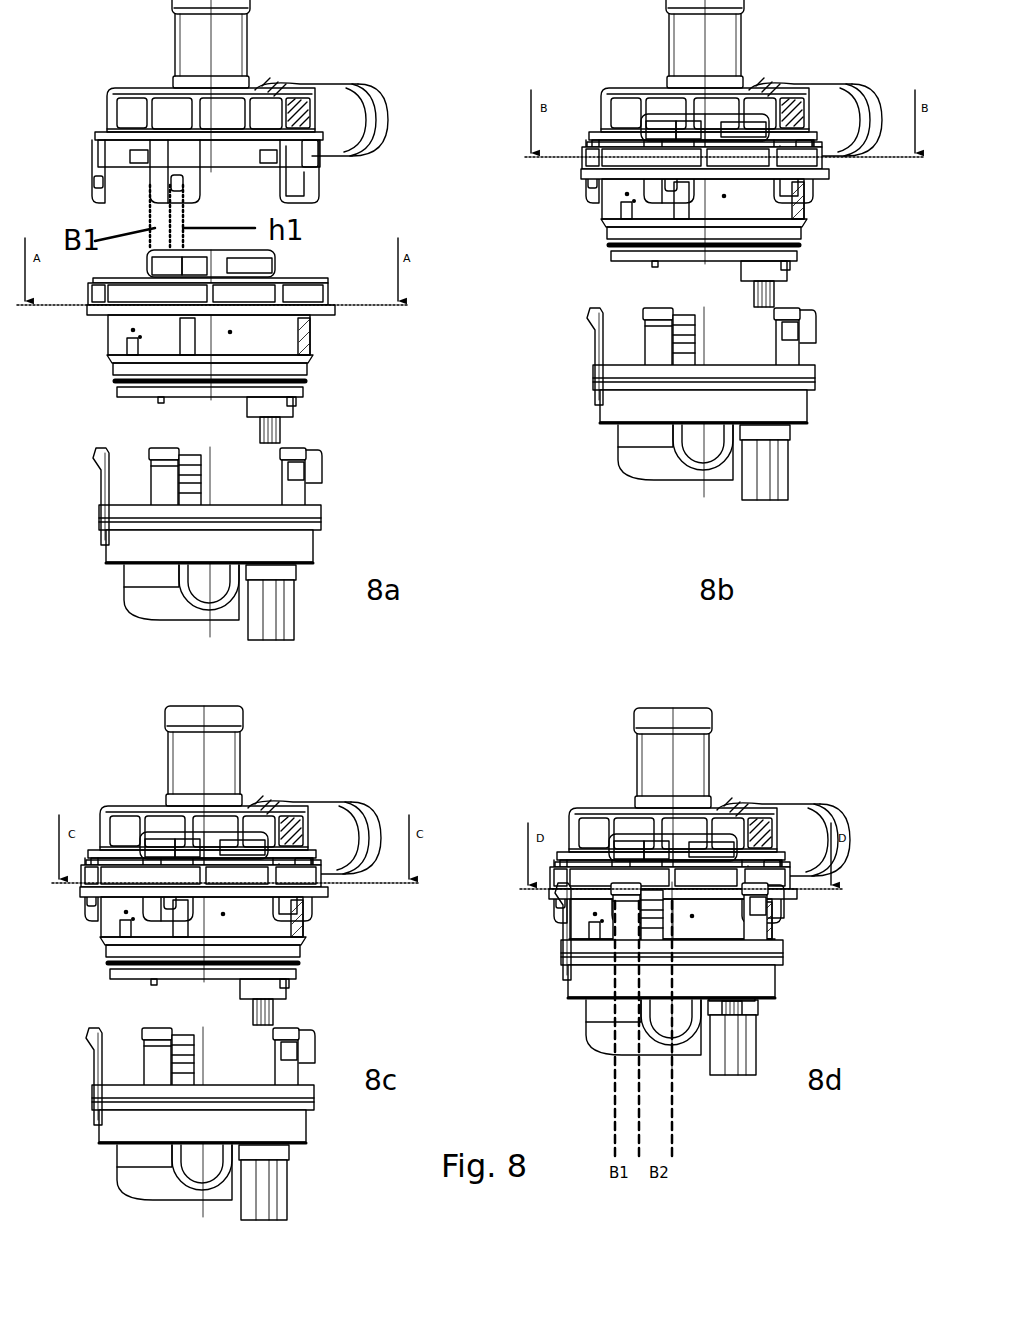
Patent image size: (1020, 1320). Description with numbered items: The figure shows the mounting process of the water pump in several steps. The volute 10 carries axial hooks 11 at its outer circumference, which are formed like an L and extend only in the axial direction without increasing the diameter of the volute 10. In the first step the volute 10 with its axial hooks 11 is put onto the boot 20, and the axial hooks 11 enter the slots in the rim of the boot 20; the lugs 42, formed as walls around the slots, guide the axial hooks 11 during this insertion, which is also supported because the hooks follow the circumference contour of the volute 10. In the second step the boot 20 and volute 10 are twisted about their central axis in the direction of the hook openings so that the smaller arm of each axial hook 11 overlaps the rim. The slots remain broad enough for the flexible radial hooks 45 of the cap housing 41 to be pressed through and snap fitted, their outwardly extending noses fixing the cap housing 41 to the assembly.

The volute 10 is at (135, 104).
The axial hooks 11 is at (168, 192).
The boot 20 is at (300, 340).
The cap housing 41 is at (125, 530).
The lugs 42 is at (640, 150).
The radial hooks 45 is at (92, 457).